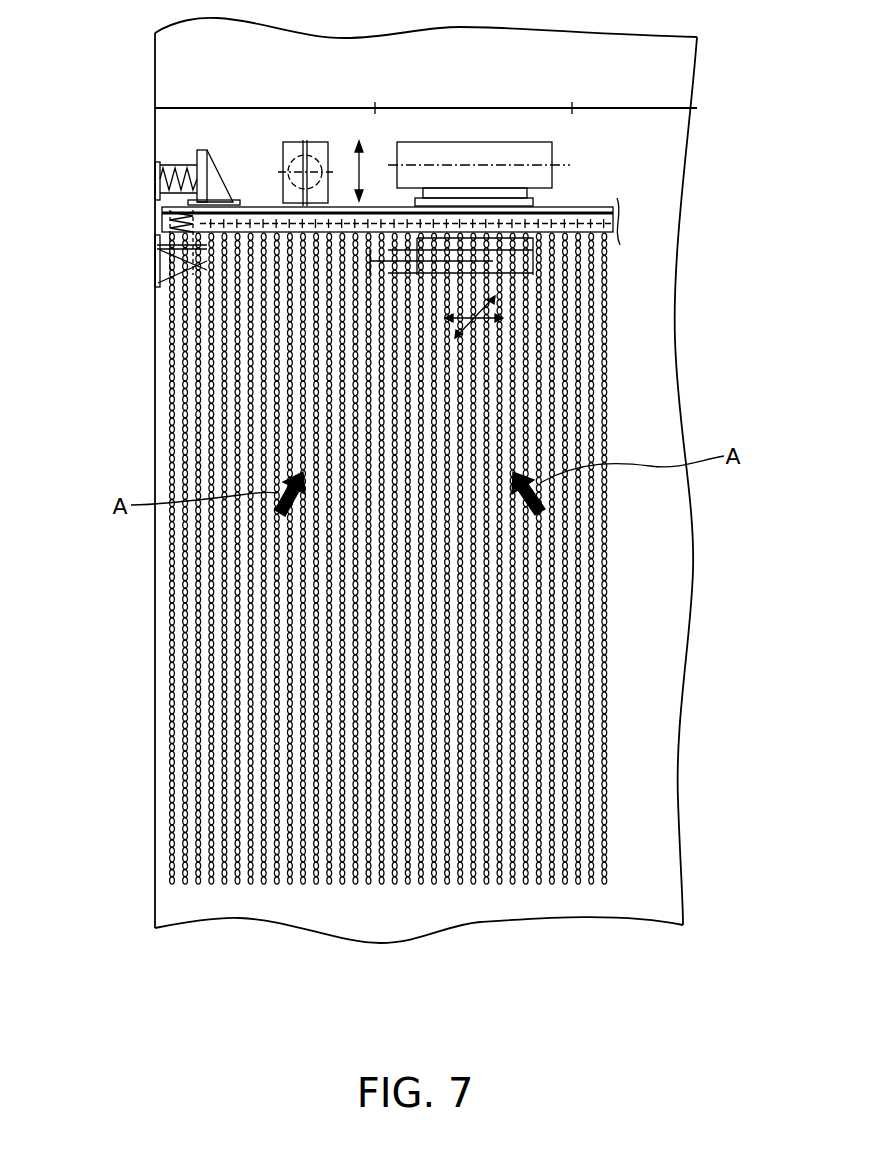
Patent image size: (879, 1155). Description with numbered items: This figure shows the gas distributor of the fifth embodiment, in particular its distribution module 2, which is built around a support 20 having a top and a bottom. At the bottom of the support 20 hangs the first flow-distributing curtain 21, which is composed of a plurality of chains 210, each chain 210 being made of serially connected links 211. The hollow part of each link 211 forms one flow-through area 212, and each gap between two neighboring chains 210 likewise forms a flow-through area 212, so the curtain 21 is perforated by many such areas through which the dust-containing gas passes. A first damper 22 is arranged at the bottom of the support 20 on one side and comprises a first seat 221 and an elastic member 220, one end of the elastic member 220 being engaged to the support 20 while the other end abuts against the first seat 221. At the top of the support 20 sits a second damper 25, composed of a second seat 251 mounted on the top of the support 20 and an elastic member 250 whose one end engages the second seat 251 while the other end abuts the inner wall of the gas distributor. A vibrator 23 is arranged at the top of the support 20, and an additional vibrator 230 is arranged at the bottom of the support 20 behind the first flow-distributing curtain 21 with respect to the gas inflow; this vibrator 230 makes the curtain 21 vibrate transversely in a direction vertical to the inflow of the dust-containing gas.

The distribution module 2 is at (266, 177).
The support 20 is at (603, 217).
The first flow-distributing curtain 21 is at (451, 558).
The chain 210 is at (580, 510).
The link 211 is at (605, 410).
The flow-through area 212 is at (596, 538).
The first damper 22 is at (90, 221).
The elastic member 220 is at (176, 222).
The first seat 221 is at (160, 250).
The vibrator 23 is at (470, 155).
The vibrator 230 is at (507, 267).
The second damper 25 is at (73, 53).
The elastic member 250 is at (174, 166).
The second seat 251 is at (201, 160).